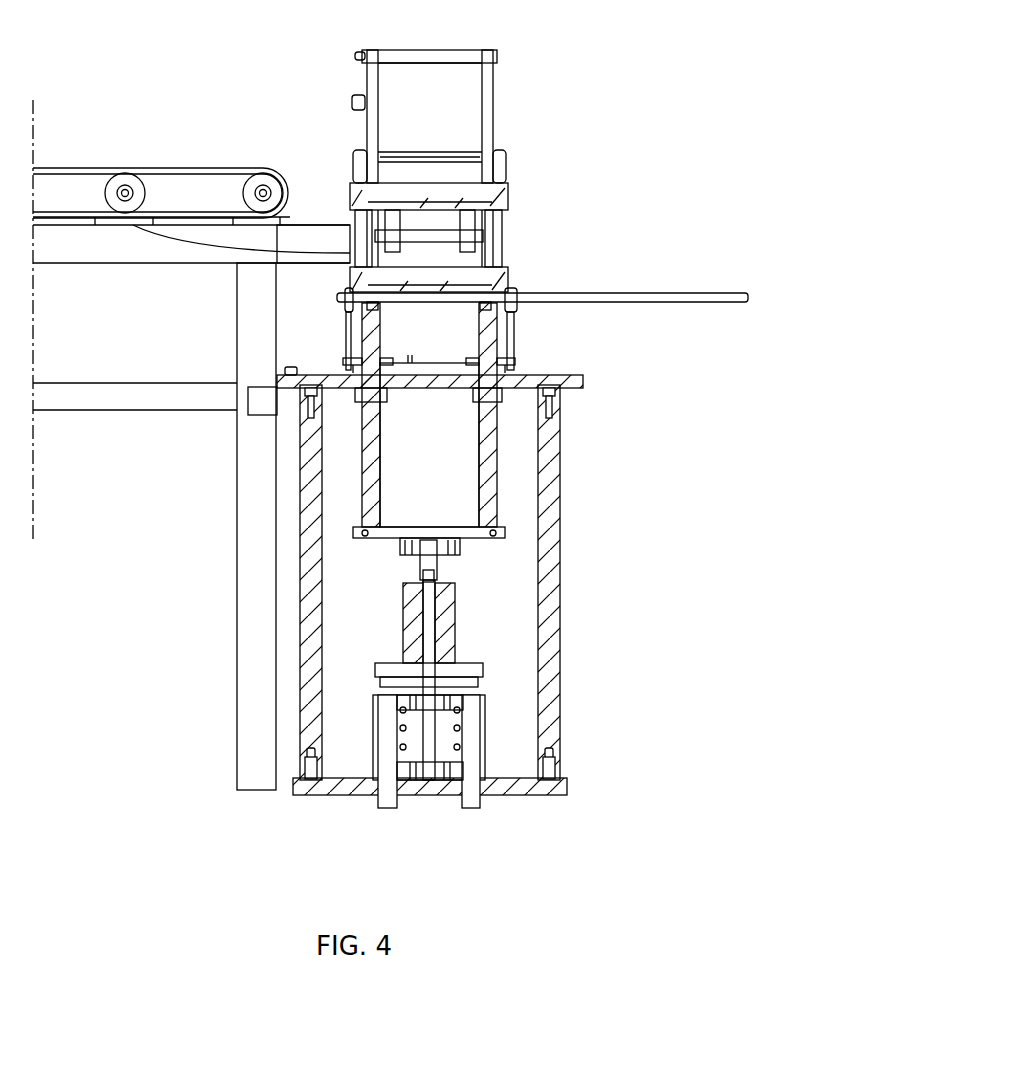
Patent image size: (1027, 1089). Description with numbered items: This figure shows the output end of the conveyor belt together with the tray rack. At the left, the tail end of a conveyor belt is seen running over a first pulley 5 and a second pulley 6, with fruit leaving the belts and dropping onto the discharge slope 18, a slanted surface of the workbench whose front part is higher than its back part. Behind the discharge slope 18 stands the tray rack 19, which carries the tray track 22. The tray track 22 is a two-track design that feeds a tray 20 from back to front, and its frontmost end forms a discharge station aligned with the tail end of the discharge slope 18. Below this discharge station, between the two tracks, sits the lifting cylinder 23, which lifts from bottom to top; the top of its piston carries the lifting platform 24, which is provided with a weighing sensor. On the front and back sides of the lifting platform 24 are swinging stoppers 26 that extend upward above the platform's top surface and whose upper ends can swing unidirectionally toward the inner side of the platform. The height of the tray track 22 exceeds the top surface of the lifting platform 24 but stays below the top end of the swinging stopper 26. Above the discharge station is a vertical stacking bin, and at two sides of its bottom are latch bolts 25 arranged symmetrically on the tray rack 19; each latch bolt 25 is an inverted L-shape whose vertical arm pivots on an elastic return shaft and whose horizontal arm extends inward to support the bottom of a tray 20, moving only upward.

The first pulley 5 is at (130, 180).
The second pulley 6 is at (265, 182).
The discharge slope 18 is at (208, 240).
The tray rack 19 is at (548, 510).
The tray 20 is at (483, 275).
The tray track 22 is at (570, 292).
The lifting cylinder 23 is at (457, 630).
The lifting platform 24 is at (510, 313).
The latch bolt 25 is at (478, 207).
The swinging stopper 26 is at (515, 307).